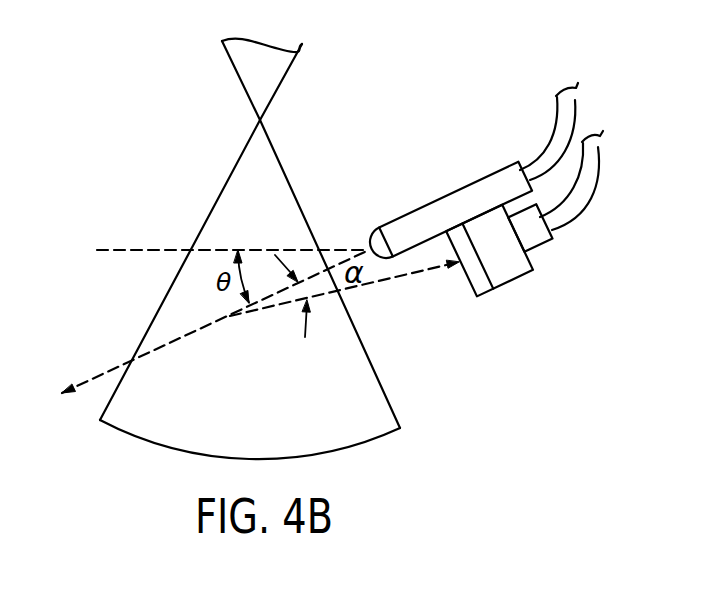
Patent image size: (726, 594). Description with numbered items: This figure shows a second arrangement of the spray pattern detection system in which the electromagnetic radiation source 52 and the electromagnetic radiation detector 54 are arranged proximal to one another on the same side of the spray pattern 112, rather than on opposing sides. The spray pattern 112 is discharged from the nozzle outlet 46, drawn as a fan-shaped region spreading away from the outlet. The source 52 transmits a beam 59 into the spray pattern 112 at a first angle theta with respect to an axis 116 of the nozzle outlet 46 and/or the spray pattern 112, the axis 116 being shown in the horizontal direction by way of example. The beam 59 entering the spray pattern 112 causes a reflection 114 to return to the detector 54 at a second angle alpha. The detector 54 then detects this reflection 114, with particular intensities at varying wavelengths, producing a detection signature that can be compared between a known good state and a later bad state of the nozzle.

The nozzle outlet 46 is at (274, 83).
The electromagnetic radiation source 52 is at (441, 164).
The electromagnetic radiation detector 54 is at (547, 302).
The beam 59 is at (182, 338).
The spray pattern 112 is at (269, 432).
The reflection 114 is at (363, 290).
The axis 116 is at (167, 249).